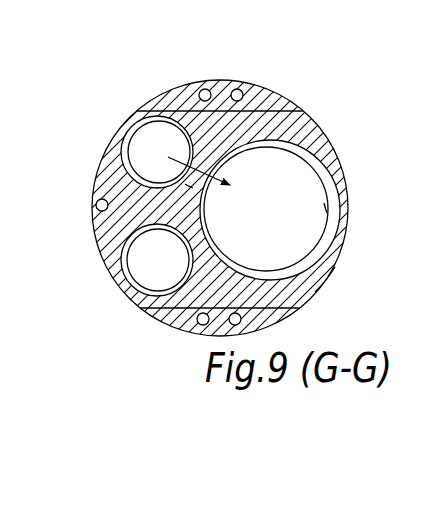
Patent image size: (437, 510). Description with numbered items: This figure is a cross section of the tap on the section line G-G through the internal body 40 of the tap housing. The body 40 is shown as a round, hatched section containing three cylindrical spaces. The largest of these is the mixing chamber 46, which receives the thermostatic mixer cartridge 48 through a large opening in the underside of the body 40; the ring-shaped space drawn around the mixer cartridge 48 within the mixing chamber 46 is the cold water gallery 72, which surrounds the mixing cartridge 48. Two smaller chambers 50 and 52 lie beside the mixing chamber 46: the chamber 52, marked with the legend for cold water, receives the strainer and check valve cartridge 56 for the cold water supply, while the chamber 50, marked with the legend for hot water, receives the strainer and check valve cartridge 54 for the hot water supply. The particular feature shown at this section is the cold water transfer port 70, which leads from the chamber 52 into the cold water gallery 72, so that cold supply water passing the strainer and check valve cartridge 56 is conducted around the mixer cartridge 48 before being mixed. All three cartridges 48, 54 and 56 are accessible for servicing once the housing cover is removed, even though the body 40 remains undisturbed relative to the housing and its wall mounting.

The body 40 is at (317, 118).
The mixing chamber 46 is at (283, 221).
The mixer cartridge 48 is at (327, 213).
The chamber 50 is at (148, 274).
The chamber 52 is at (148, 138).
The strainer and check valve cartridge 54 is at (130, 266).
The strainer and check valve cartridge 56 is at (123, 130).
The cold water transfer port 70 is at (193, 188).
The cold water gallery 72 is at (335, 267).